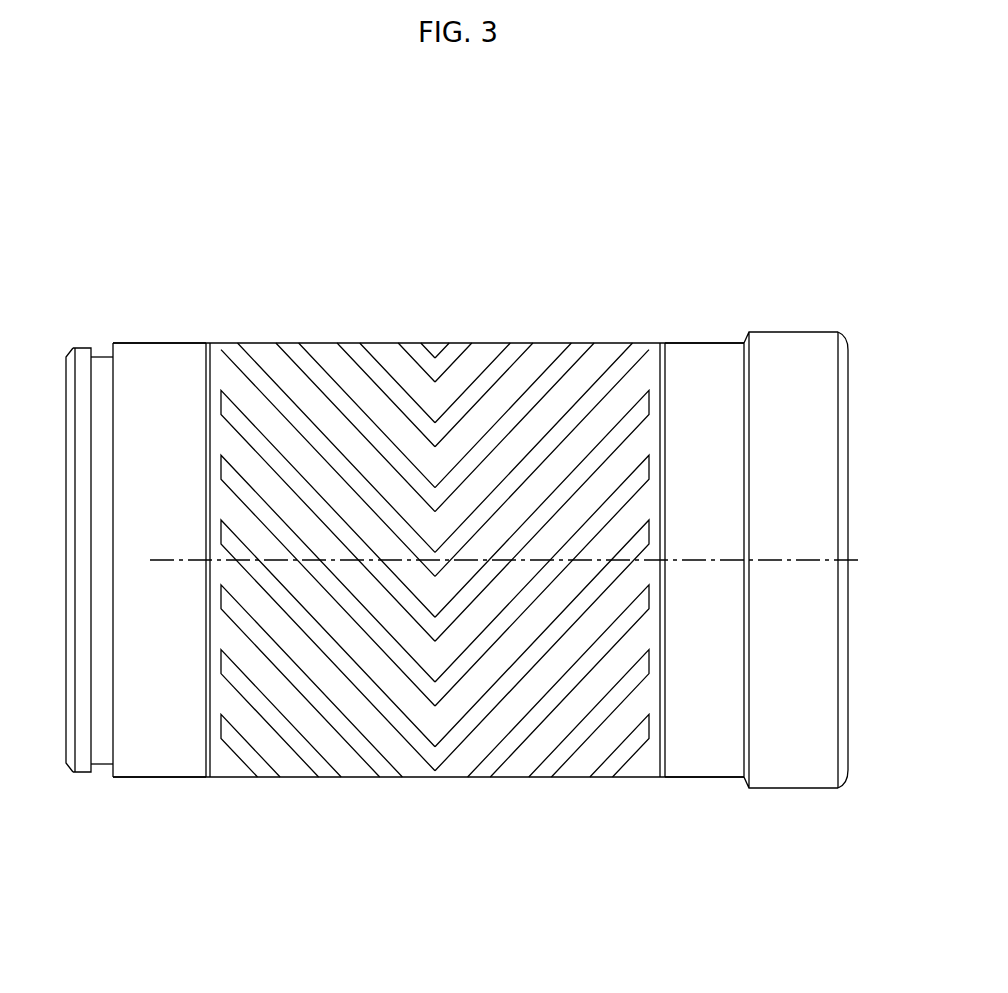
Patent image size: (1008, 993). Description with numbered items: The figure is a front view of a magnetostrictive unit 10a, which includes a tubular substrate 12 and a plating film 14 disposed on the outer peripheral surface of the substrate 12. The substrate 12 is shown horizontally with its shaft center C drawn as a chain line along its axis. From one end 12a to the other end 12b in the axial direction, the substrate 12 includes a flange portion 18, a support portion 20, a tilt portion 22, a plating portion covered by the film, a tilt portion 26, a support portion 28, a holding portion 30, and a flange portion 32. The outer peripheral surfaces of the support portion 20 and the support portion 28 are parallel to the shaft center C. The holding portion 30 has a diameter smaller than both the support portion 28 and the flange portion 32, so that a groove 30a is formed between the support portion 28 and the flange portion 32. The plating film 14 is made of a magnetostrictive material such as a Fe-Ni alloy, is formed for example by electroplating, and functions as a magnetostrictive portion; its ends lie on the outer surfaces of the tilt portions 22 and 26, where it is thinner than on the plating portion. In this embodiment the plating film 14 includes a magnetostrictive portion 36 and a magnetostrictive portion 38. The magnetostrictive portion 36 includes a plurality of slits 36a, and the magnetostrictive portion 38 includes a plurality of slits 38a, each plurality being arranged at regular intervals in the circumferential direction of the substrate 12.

The magnetostrictive unit 10a is at (464, 509).
The tubular substrate 12 is at (194, 341).
The one end of the substrate 12a is at (853, 363).
The other end of the substrate 12b is at (64, 373).
The plating film 14 is at (435, 520).
The flange portion 18 is at (809, 522).
The support portion 20 is at (700, 363).
The tilt portion 22 is at (661, 342).
The tilt portion 26 is at (209, 342).
The support portion 28 is at (147, 362).
The holding portion 30 is at (93, 561).
The groove 30a is at (103, 765).
The flange portion 32 is at (83, 357).
The magnetostrictive portion 36 is at (542, 528).
The slits 36a is at (497, 370).
The magnetostrictive portion 38 is at (328, 526).
The slits 38a is at (372, 370).
The shaft center C is at (800, 557).